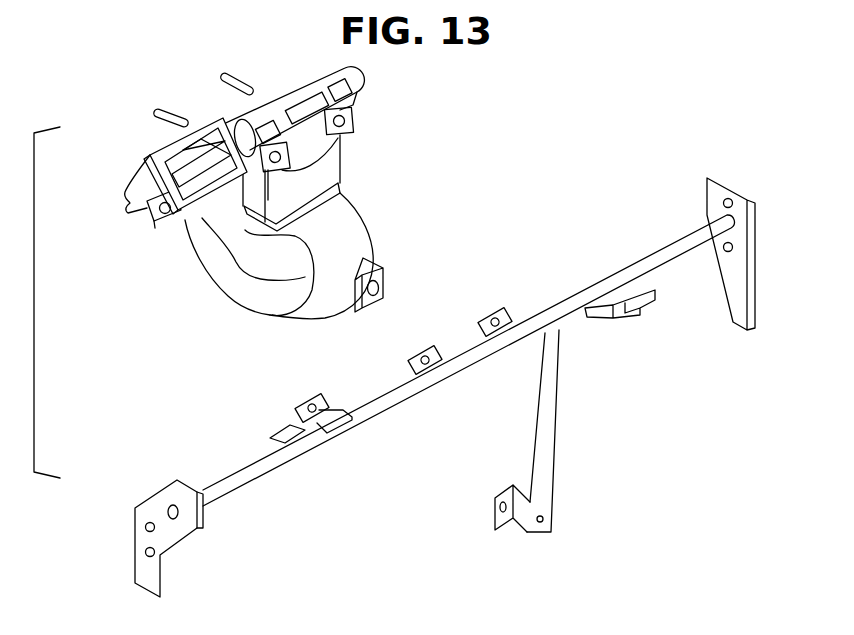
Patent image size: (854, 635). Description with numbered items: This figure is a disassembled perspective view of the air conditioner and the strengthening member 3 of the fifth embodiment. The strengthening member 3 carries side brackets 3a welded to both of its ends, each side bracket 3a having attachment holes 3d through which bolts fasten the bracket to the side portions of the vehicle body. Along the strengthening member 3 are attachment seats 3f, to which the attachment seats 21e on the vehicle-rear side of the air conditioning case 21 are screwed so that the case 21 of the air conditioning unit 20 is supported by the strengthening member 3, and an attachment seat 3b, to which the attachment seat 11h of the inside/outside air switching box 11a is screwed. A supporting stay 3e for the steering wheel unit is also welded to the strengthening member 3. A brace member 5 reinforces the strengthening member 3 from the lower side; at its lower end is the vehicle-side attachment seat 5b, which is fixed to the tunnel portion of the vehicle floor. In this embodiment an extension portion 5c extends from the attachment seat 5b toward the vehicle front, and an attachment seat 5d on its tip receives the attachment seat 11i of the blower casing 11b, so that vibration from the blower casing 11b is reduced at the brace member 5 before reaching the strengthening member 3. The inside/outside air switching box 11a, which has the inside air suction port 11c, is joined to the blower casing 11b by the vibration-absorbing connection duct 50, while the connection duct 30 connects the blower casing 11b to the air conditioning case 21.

The strengthening member 3 is at (648, 250).
The side bracket 3a is at (758, 280).
The attachment seat 3b is at (340, 417).
The attachment hole 3d is at (724, 199).
The supporting stay 3e is at (617, 327).
The attachment seat 3f is at (428, 347).
The brace member 5 is at (553, 473).
The attachment seat 5b is at (545, 519).
The extension portion 5c is at (523, 513).
The attachment seat 5d is at (500, 507).
The air conditioning unit 20 is at (353, 179).
The air conditioning case 21 is at (343, 160).
The attachment seat 21e is at (353, 152).
The connection duct 30 is at (343, 198).
The connection duct 50 is at (233, 310).
The inside/outside air switching box 11a is at (127, 210).
The blower casing 11b is at (372, 232).
The inside air suction port 11c is at (200, 160).
The attachment seat 11h is at (155, 228).
The attachment seat 11i is at (374, 313).